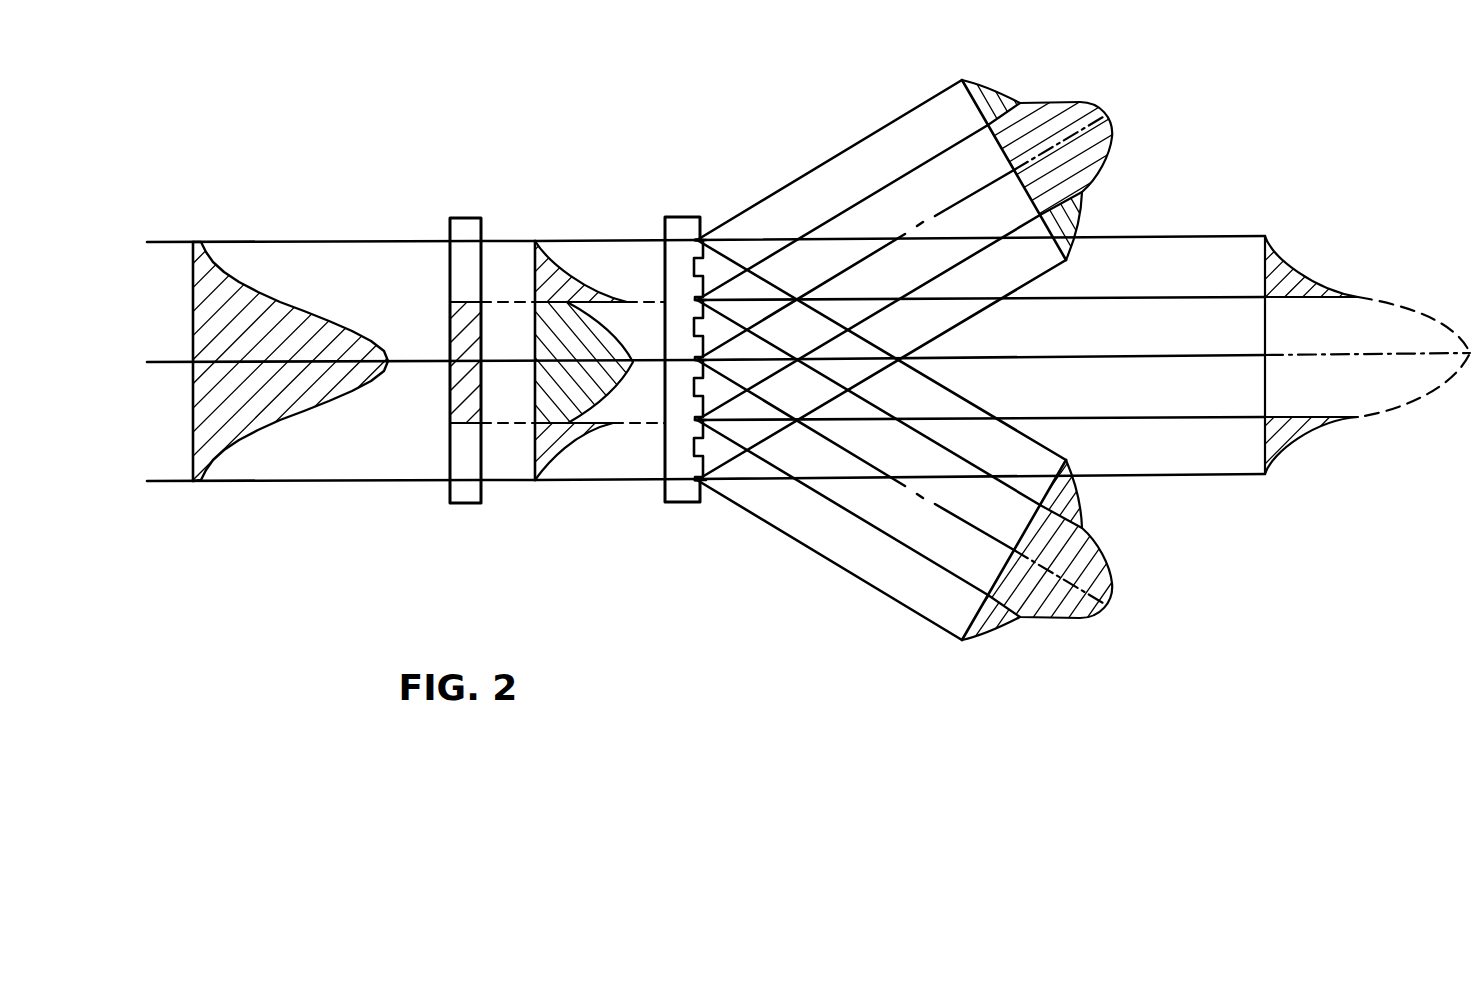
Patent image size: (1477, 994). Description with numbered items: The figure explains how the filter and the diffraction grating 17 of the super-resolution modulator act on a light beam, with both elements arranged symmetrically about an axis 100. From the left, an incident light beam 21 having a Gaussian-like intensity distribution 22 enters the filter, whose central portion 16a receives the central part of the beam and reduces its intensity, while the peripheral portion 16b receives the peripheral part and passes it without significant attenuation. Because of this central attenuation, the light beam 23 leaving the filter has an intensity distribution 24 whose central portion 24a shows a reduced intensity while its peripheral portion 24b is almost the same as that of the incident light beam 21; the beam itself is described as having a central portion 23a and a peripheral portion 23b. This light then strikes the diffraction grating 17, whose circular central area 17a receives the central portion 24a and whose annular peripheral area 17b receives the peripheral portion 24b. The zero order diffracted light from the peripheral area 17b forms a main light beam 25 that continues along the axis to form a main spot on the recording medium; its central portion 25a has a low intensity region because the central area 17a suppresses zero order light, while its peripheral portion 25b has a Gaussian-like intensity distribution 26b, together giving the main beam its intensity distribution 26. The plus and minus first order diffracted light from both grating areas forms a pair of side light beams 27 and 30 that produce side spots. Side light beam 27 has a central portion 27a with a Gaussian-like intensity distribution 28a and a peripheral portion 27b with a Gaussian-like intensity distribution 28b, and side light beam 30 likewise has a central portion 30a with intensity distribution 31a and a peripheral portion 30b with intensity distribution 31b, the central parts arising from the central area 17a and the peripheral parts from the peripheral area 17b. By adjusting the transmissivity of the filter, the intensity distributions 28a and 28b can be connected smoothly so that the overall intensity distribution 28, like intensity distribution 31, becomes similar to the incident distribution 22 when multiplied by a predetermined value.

The axis 100 is at (158, 362).
The incident light beam 21 is at (275, 463).
The intensity distribution 22 is at (273, 283).
The central portion 16a is at (452, 317).
The peripheral portion 16b is at (453, 260).
The light beam 23 is at (507, 463).
The central portion 23a is at (522, 400).
The peripheral portion 23b is at (515, 265).
The intensity distribution 24 is at (586, 357).
The central portion 24a is at (636, 368).
The peripheral portion 24b is at (602, 295).
The diffraction grating 17 is at (712, 356).
The central area 17a is at (722, 400).
The peripheral area 17b is at (676, 214).
The side light beam 27 is at (881, 274).
The central portion 27a is at (908, 310).
The peripheral portion 27b is at (825, 183).
The intensity distribution 28 is at (1058, 168).
The intensity distribution 28a is at (1097, 113).
The intensity distribution 28b is at (995, 92).
The side light beam 30 is at (881, 452).
The central portion 30a is at (960, 560).
The peripheral portion 30b is at (957, 430).
The intensity distribution 31 is at (1032, 549).
The intensity distribution 31a is at (1090, 600).
The intensity distribution 31b is at (1067, 503).
The main light beam 25 is at (981, 383).
The central portion 25a is at (1247, 398).
The peripheral portion 25b is at (1187, 247).
The intensity distribution 26 is at (1310, 349).
The intensity distribution 26b is at (1285, 270).